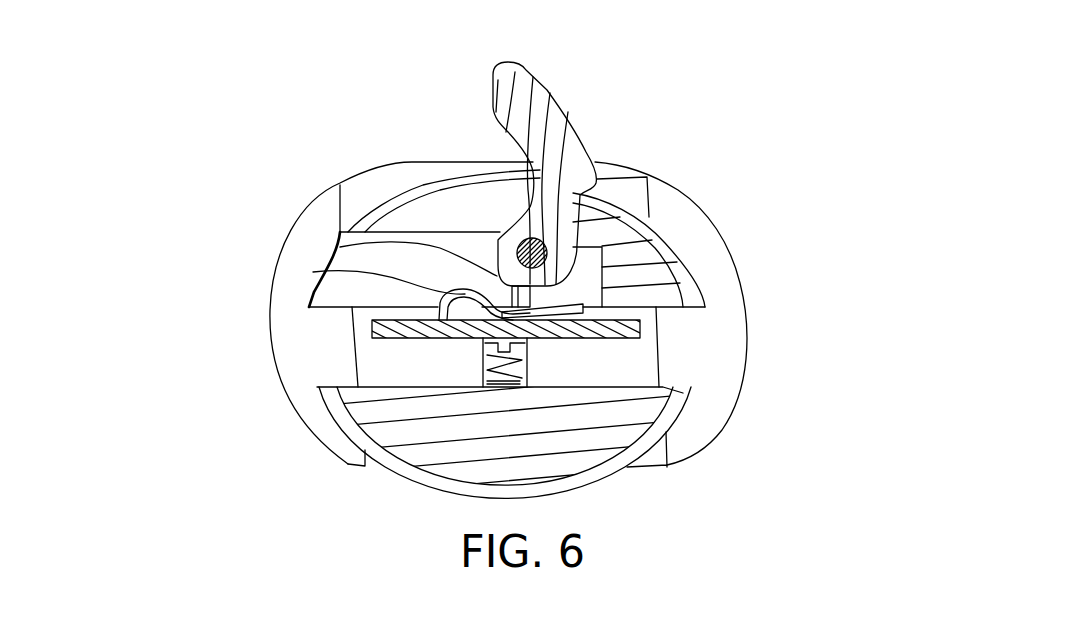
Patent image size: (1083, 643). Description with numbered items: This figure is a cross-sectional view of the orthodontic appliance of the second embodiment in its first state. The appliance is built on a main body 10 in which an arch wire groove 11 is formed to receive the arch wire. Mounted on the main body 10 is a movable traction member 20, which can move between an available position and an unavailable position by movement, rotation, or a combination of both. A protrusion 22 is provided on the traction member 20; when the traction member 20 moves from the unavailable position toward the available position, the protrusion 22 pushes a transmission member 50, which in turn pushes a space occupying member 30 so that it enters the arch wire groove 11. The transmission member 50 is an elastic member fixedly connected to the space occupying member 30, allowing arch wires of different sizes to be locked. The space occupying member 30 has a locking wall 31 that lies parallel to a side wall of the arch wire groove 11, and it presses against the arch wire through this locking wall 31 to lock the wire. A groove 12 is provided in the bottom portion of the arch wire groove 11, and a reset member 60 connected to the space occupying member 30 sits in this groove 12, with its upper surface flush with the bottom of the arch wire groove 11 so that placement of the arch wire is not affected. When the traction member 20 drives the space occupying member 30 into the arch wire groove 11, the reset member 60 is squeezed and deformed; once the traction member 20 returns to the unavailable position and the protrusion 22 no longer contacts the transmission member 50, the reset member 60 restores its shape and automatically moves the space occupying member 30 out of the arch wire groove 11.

The main body 10 is at (632, 268).
The arch wire groove 11 is at (385, 375).
The groove 12 is at (528, 367).
The traction member 20 is at (557, 135).
The protrusion 22 is at (340, 247).
The space occupying member 30 is at (600, 322).
The locking wall 31 is at (560, 343).
The transmission member 50 is at (313, 272).
The reset member 60 is at (483, 370).